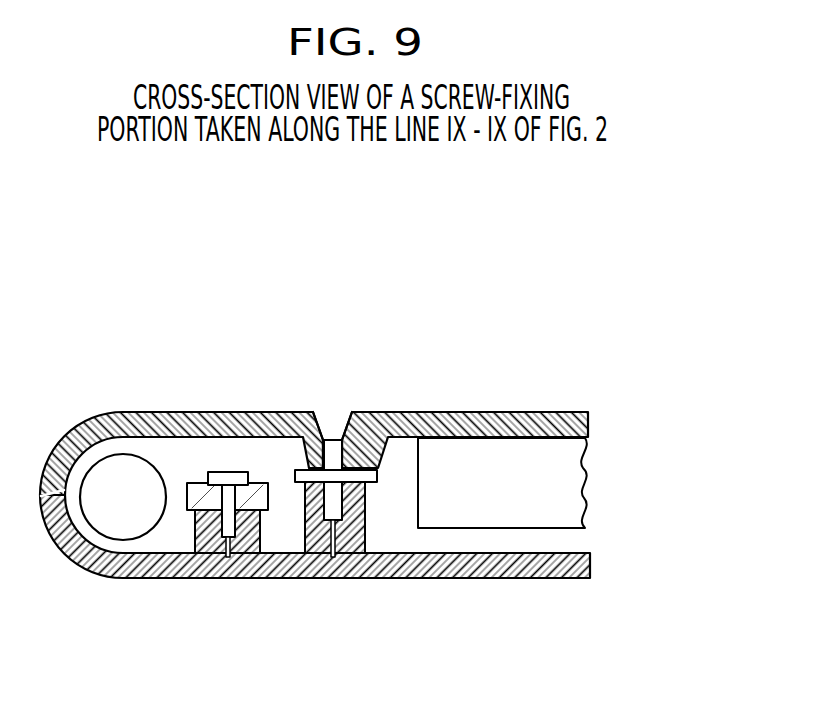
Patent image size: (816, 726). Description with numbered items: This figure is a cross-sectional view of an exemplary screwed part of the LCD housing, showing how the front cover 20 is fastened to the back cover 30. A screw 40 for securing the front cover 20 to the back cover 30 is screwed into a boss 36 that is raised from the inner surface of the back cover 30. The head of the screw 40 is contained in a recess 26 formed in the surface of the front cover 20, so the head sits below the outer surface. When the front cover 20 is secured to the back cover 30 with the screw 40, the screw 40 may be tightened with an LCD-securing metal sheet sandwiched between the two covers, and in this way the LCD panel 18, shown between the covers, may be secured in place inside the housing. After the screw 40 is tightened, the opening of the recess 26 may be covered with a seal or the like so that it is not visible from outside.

The LCD panel 18 is at (573, 471).
The front cover 20 is at (505, 412).
The recess 26 is at (338, 436).
The back cover 30 is at (500, 578).
The boss 36 is at (365, 515).
The screw 40 is at (332, 440).